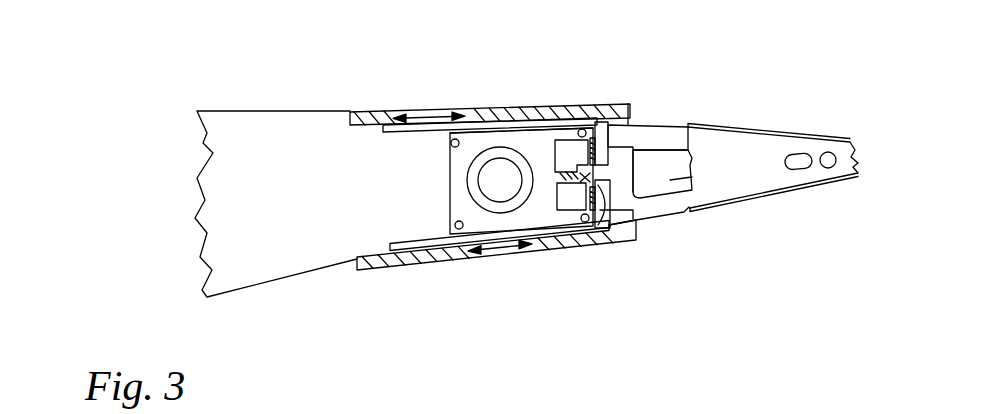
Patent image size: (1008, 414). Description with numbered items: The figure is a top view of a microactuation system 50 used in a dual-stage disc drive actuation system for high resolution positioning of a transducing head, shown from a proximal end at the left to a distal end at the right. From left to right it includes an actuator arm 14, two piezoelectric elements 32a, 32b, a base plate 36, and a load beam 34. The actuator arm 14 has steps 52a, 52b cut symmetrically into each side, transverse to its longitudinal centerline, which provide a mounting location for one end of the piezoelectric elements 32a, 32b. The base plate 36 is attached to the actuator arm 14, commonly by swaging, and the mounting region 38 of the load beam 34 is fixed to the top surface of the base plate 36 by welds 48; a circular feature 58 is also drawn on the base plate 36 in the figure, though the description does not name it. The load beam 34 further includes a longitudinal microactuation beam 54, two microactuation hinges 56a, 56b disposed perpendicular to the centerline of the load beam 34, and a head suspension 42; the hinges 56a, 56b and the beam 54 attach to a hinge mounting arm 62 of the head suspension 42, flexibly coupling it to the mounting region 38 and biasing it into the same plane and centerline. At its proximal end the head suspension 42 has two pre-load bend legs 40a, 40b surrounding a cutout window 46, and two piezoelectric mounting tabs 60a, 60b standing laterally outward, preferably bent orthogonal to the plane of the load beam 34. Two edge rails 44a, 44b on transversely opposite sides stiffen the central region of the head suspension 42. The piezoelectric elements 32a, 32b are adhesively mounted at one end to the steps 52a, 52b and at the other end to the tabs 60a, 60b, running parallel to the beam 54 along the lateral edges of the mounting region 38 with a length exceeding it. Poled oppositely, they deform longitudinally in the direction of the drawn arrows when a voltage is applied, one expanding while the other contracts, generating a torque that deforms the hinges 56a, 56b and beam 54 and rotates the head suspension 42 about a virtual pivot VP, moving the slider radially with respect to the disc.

The microactuation system 50 is at (60, 152).
The actuator arm 14 is at (250, 267).
The piezoelectric element 32a is at (378, 118).
The piezoelectric element 32b is at (362, 262).
The step 52a is at (362, 135).
The step 52b is at (377, 247).
The base plate 36 is at (455, 245).
The mounting region 38 is at (468, 152).
The drive boss 58 is at (503, 170).
The welds 48 is at (456, 223).
The longitudinal microactuation beam 54 is at (579, 129).
The microactuation hinge 56a is at (630, 145).
The microactuation hinge 56b is at (596, 213).
The hinge mounting arm 62 is at (583, 179).
The virtual pivot VP is at (588, 180).
The piezoelectric mounting tab 60a is at (607, 120).
The piezoelectric mounting tab 60b is at (614, 215).
The pre-load bend leg 40a is at (650, 133).
The pre-load bend leg 40b is at (656, 203).
The load beam 34 is at (650, 80).
The head suspension 42 is at (818, 170).
The edge rail 44a is at (815, 134).
The edge rail 44b is at (797, 192).
The cutout window 46 is at (697, 172).